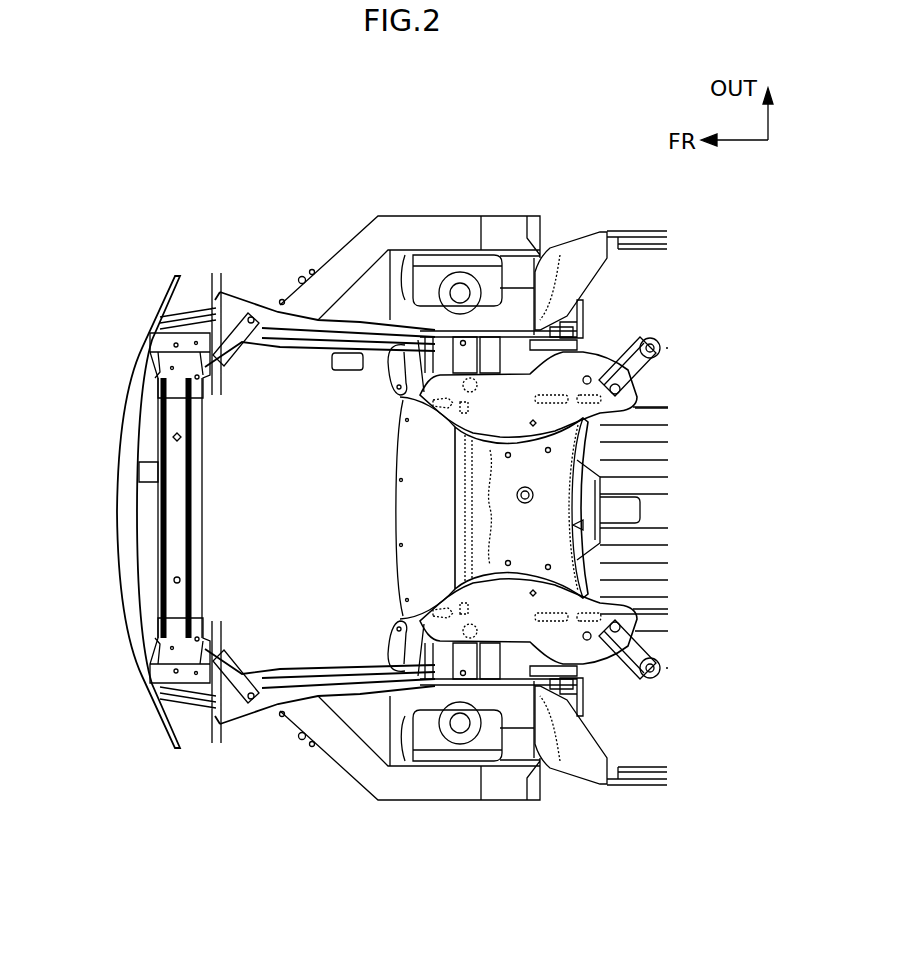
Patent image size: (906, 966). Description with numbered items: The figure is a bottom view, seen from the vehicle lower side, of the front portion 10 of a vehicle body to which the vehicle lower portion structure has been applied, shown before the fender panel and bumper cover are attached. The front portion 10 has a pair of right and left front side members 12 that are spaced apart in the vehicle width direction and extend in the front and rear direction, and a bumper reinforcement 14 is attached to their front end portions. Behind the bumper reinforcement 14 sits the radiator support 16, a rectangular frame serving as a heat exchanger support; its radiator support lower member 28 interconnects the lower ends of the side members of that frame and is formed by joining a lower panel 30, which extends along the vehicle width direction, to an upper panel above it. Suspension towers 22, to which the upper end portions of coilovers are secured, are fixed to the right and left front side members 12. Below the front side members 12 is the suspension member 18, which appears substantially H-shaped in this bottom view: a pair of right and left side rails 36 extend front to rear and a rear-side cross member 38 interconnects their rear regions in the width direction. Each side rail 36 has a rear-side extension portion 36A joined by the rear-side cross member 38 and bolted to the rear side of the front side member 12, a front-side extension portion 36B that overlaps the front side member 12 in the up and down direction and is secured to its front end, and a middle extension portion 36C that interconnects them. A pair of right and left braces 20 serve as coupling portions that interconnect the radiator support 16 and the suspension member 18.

The front portion of vehicle body 10 is at (267, 153).
The front side member 12 is at (347, 312).
The bumper reinforcement 14 is at (117, 488).
The radiator support 16 is at (235, 513).
The suspension member 18 is at (583, 524).
The brace 20 is at (228, 347).
The suspension tower 22 is at (430, 270).
The radiator support lower member 28 is at (203, 468).
The lower panel 30 is at (170, 452).
The side rail 36 is at (456, 544).
The rear-side extension portion 36A is at (604, 362).
The front-side extension portion 36B is at (283, 303).
The middle extension portion 36C is at (392, 370).
The rear-side cross member 38 is at (578, 487).